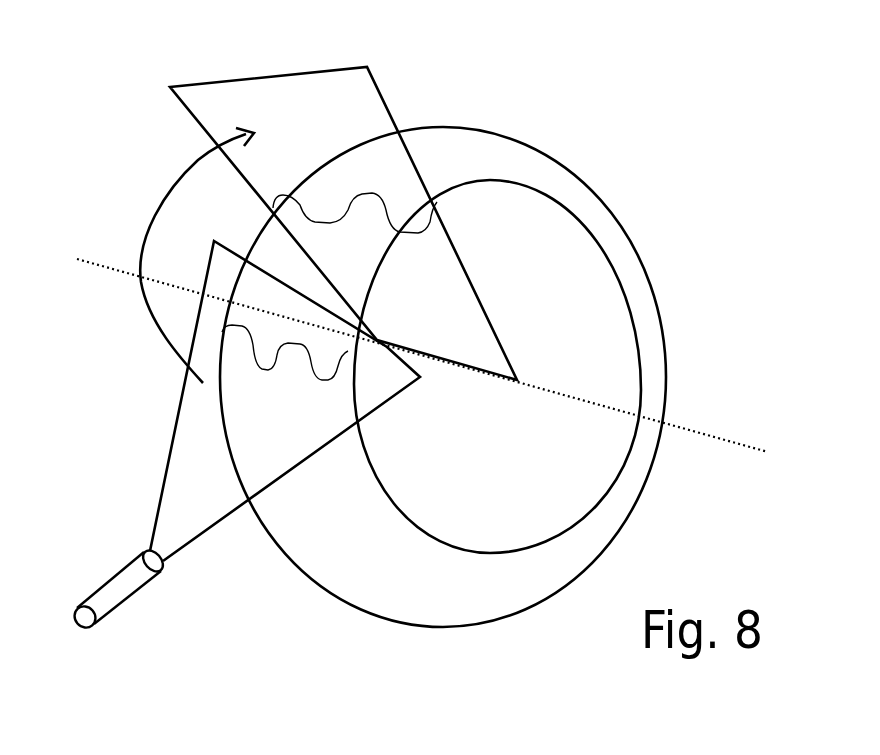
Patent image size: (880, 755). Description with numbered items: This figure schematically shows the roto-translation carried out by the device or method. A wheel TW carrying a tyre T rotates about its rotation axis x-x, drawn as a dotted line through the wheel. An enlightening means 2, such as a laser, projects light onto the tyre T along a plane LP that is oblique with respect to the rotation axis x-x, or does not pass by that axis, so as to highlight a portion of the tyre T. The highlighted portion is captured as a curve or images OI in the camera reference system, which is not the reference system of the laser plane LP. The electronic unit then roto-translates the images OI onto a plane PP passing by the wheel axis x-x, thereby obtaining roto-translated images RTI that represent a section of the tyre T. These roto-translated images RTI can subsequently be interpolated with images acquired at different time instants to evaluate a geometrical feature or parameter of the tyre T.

The enlightening means 2 is at (122, 600).
The tyre T is at (393, 624).
The wheel TW is at (633, 248).
The plane PP is at (328, 117).
The plane LP is at (198, 442).
The roto-translated images RTI is at (373, 193).
The images OI is at (329, 380).
The rotation axis x is at (424, 352).